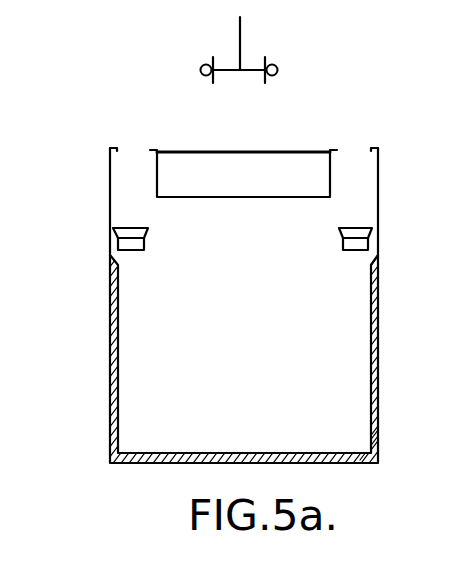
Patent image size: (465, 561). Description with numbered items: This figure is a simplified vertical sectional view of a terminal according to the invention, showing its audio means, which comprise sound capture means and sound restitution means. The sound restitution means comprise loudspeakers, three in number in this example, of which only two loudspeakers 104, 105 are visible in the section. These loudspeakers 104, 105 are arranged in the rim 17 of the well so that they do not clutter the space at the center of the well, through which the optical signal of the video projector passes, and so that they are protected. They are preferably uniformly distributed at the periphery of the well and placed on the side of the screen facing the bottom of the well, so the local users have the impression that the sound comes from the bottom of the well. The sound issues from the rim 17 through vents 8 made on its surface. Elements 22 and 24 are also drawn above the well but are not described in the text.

The vents 8 is at (135, 148).
The rim 17 is at (110, 146).
The right pin of handle 22 is at (277, 62).
The left pin of handle 24 is at (201, 65).
The loudspeaker 104 is at (112, 235).
The loudspeaker 105 is at (377, 232).